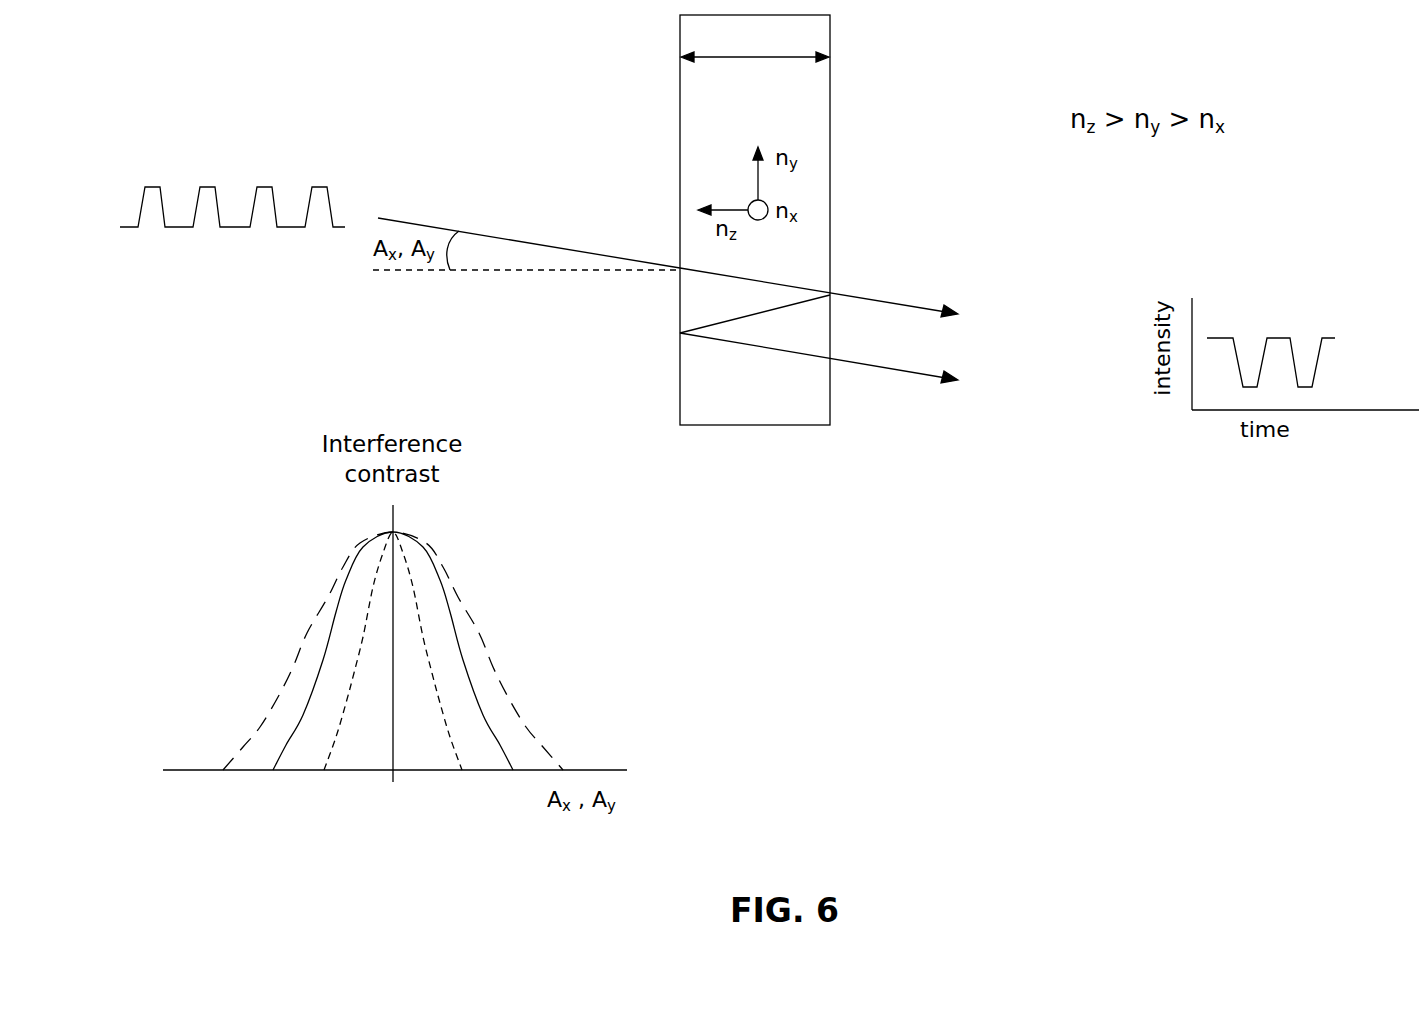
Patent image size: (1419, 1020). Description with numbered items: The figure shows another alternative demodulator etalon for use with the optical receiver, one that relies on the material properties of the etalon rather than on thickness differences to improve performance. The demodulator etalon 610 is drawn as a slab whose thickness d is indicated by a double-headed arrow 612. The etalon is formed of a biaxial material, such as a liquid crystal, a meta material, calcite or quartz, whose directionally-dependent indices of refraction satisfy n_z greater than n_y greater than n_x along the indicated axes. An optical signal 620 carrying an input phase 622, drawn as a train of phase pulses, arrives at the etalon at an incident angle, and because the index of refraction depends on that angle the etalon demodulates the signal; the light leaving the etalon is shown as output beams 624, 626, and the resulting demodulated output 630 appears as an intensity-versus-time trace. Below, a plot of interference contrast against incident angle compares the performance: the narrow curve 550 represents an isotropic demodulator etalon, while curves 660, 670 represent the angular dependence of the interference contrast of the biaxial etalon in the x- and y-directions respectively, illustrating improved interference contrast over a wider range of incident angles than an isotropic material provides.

The demodulator etalon 610 is at (830, 90).
The double-headed arrow 612 is at (742, 58).
The optical signal 620 is at (521, 241).
The input phase 622 is at (333, 197).
The transmitted output beam 624 is at (863, 298).
The internally reflected output beam 626 is at (852, 362).
The demodulated output 630 is at (1330, 338).
The curve 550 is at (430, 673).
The curve 660 is at (440, 582).
The curve 670 is at (320, 603).